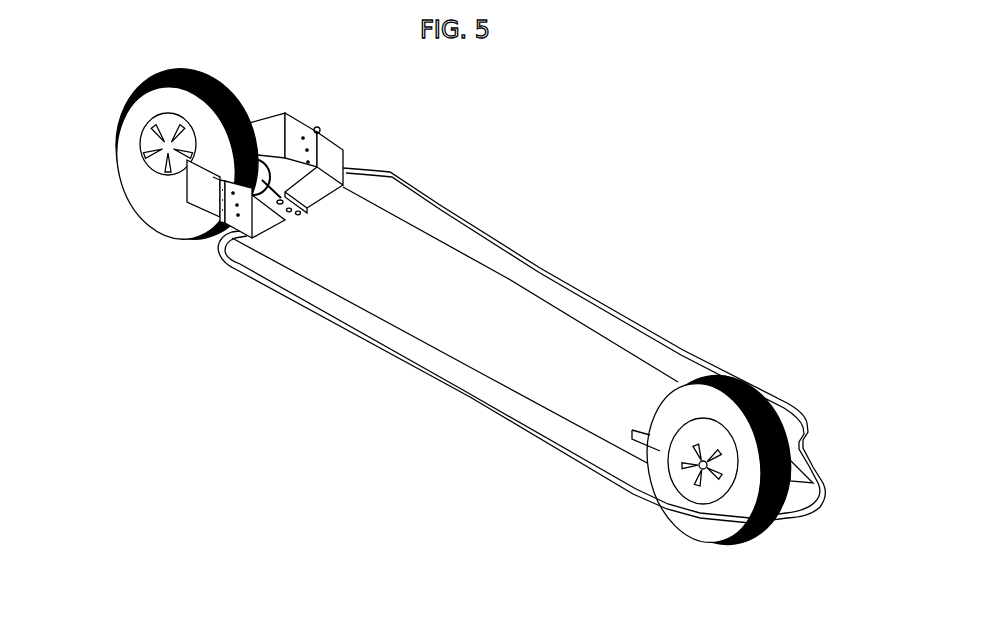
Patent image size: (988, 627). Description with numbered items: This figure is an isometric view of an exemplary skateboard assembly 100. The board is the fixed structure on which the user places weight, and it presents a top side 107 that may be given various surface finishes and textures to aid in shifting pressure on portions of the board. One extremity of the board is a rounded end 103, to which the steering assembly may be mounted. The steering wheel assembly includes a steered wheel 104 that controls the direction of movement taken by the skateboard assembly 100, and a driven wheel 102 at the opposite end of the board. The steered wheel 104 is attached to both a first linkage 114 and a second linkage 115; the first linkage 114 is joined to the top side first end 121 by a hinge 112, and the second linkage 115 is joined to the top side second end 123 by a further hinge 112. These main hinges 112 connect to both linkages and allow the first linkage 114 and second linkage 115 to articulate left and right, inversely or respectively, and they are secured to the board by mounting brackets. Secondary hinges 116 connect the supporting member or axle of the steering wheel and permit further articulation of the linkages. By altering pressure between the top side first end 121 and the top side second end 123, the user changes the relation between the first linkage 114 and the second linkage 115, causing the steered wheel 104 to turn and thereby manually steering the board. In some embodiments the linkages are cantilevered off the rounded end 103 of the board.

The skateboard assembly 100 is at (583, 386).
The driven wheel 102 is at (733, 545).
The rounded end 103 is at (835, 515).
The steered wheel 104 is at (135, 74).
The top side 107 is at (517, 340).
The hinge 112 is at (357, 125).
The first linkage 114 is at (265, 112).
The second linkage 115 is at (185, 213).
The secondary hinge 116 is at (180, 157).
The top side first end 121 is at (600, 297).
The top side second end 123 is at (548, 455).